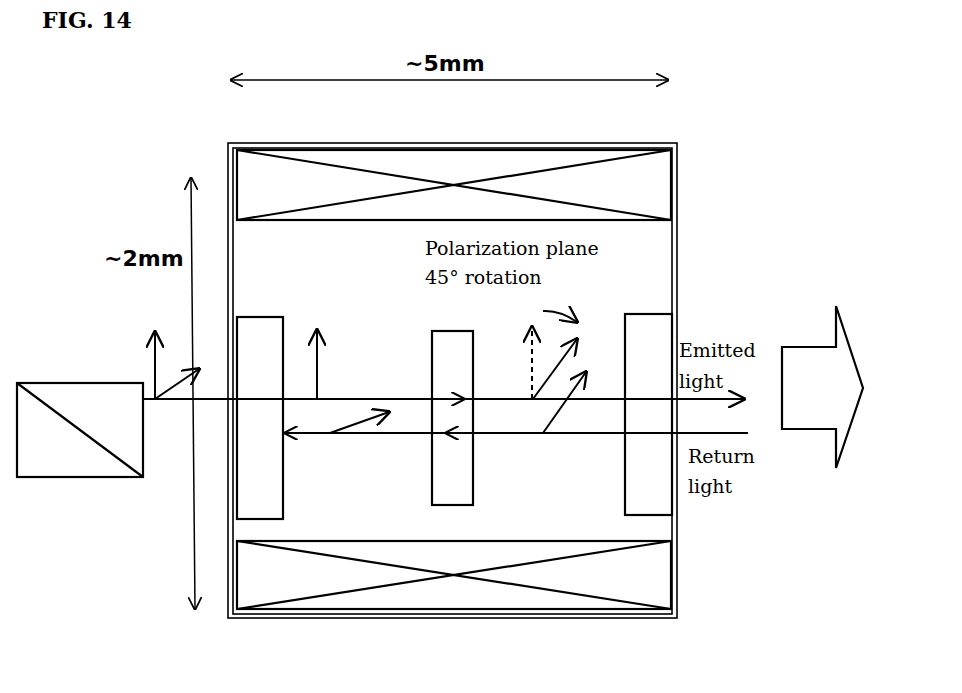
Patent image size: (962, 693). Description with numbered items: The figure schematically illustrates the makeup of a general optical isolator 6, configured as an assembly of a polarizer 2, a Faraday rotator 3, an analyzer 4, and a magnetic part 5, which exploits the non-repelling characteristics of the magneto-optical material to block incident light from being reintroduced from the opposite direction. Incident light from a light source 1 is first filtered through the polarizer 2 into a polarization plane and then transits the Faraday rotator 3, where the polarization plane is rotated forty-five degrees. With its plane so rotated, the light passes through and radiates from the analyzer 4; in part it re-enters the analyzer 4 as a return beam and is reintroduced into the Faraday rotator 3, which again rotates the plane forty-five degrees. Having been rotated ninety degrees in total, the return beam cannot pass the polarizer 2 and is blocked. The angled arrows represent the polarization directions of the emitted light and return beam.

The light source 1 is at (77, 381).
The polarizer 2 is at (285, 491).
The Faraday rotator 3 is at (466, 488).
The analyzer 4 is at (623, 489).
The magnetic part 5 is at (453, 153).
The optical isolator 6 is at (683, 130).